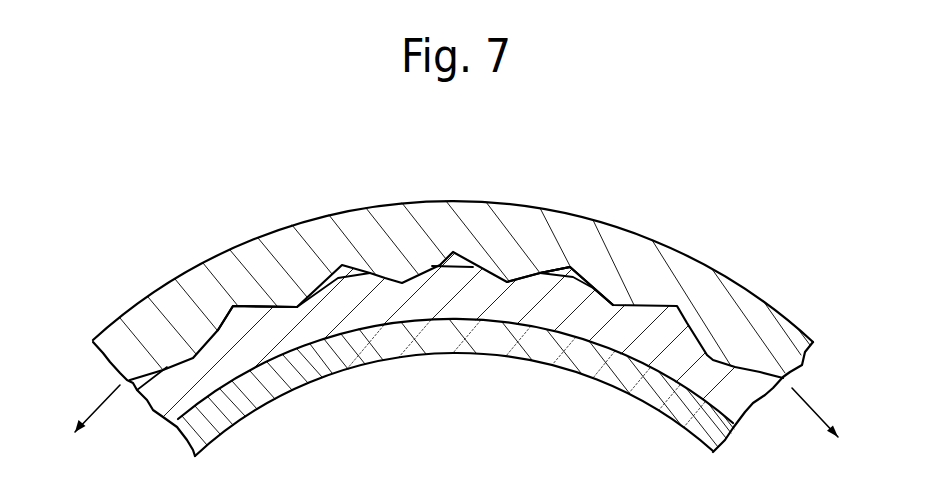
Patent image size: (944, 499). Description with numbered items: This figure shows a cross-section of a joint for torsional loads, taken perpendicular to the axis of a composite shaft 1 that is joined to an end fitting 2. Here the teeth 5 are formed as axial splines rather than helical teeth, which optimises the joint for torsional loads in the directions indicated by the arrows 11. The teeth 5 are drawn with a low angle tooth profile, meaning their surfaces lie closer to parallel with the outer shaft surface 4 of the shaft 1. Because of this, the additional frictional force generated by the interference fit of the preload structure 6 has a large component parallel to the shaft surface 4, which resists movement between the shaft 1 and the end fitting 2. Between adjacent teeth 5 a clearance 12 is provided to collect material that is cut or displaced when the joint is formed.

The composite shaft 1 is at (387, 297).
The end fitting 2 is at (735, 298).
The shaft surface 4 is at (313, 293).
The teeth 5 is at (271, 300).
The preload structure 6 is at (605, 380).
The arrows 11 is at (97, 400).
The clearance 12 is at (575, 272).